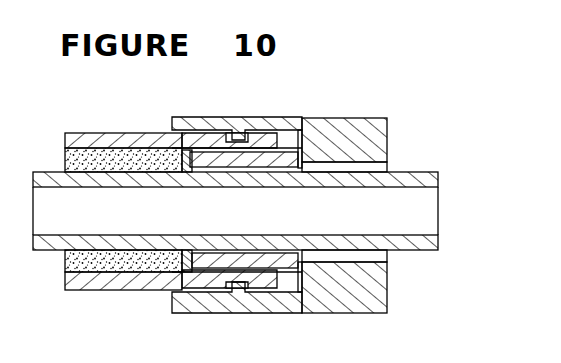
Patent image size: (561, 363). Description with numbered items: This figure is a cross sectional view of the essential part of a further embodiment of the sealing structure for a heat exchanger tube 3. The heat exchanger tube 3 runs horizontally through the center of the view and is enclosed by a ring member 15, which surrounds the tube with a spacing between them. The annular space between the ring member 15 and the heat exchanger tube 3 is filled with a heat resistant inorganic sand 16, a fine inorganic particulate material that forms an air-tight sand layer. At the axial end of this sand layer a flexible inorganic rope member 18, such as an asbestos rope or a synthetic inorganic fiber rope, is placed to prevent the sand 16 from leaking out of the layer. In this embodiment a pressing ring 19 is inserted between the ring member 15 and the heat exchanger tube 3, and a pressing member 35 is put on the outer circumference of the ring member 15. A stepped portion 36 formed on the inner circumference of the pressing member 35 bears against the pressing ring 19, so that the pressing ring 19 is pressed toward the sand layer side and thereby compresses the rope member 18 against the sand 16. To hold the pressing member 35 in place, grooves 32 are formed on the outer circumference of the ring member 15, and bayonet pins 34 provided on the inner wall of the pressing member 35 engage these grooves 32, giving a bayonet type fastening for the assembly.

The heat exchanger tube 3 is at (132, 178).
The ring member 15 is at (127, 143).
The heat resistant inorganic sand 16 is at (97, 147).
The flexible inorganic rope member 18 is at (189, 131).
The pressing ring 19 is at (287, 160).
The grooves 32 is at (256, 150).
The bayonet pins 34 is at (241, 137).
The pressing member 35 is at (388, 137).
The stepped portion 36 is at (302, 146).